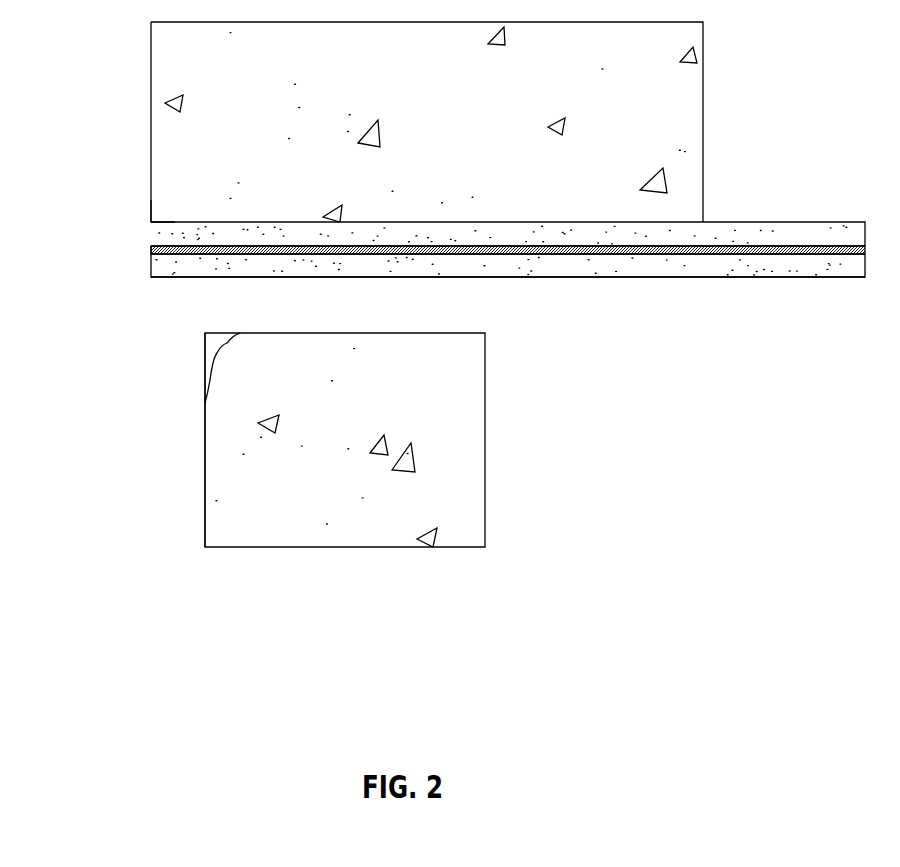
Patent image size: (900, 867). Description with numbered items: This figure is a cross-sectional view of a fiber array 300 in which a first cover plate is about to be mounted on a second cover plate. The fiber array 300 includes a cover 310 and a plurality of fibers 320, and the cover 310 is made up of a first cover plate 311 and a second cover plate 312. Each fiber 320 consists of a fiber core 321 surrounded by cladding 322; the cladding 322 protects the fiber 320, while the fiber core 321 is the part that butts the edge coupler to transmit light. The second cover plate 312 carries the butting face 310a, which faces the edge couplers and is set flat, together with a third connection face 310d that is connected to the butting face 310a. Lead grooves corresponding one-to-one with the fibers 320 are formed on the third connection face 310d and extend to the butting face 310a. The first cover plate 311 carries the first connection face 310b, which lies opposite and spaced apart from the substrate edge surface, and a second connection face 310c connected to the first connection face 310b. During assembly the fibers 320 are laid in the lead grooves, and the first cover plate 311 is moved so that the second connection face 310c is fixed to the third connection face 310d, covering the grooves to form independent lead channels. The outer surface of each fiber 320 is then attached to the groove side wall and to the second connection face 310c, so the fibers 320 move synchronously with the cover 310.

The fiber array 300 is at (101, 101).
The cover 310 is at (622, 335).
The first cover plate 311 is at (440, 347).
The second cover plate 312 is at (606, 203).
The butting face 310a is at (162, 222).
The first connection face 310b is at (205, 487).
The second connection face 310c is at (205, 403).
The third connection face 310d is at (192, 278).
The fiber 320 is at (742, 335).
The fiber core 321 is at (655, 252).
The cladding 322 is at (720, 258).